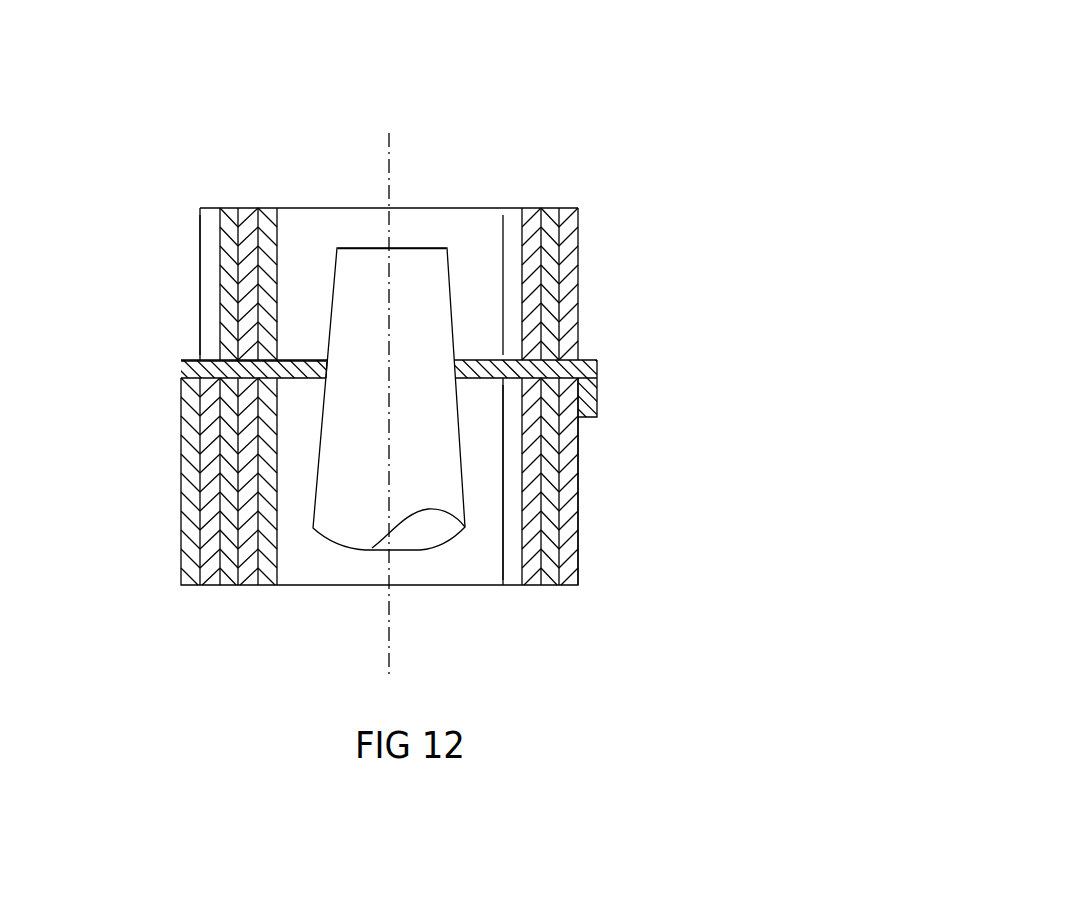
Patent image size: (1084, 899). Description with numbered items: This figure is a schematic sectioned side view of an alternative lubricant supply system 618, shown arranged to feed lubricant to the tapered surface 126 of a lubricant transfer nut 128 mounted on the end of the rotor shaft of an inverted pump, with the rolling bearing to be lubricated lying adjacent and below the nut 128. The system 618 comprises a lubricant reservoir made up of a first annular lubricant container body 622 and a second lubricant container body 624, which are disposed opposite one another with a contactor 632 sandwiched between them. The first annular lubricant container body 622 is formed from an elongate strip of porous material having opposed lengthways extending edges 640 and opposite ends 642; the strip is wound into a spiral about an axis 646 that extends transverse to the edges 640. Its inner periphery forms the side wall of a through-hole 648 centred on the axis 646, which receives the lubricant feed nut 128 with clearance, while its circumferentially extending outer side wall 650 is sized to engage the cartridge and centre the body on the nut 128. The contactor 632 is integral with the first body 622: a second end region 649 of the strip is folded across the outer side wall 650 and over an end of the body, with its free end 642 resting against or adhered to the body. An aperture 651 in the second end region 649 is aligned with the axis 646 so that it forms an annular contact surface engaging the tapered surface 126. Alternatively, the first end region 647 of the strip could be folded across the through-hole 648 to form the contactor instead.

The lubricant supply system 618 is at (664, 132).
The second lubricant container body 624 is at (592, 282).
The first annular lubricant container body 622 is at (592, 487).
The second end region 649 is at (190, 599).
The lengthways extending edges 640 is at (577, 392).
The ends 642 is at (213, 255).
The contactor 632 is at (315, 362).
The outer side wall 650 is at (577, 549).
The tapered surface 126 is at (333, 280).
The through-hole 648 is at (313, 546).
The first end region 647 is at (423, 247).
The aperture 651 is at (327, 360).
The lubricant transfer nut 128 is at (492, 238).
The axis 646 is at (389, 197).